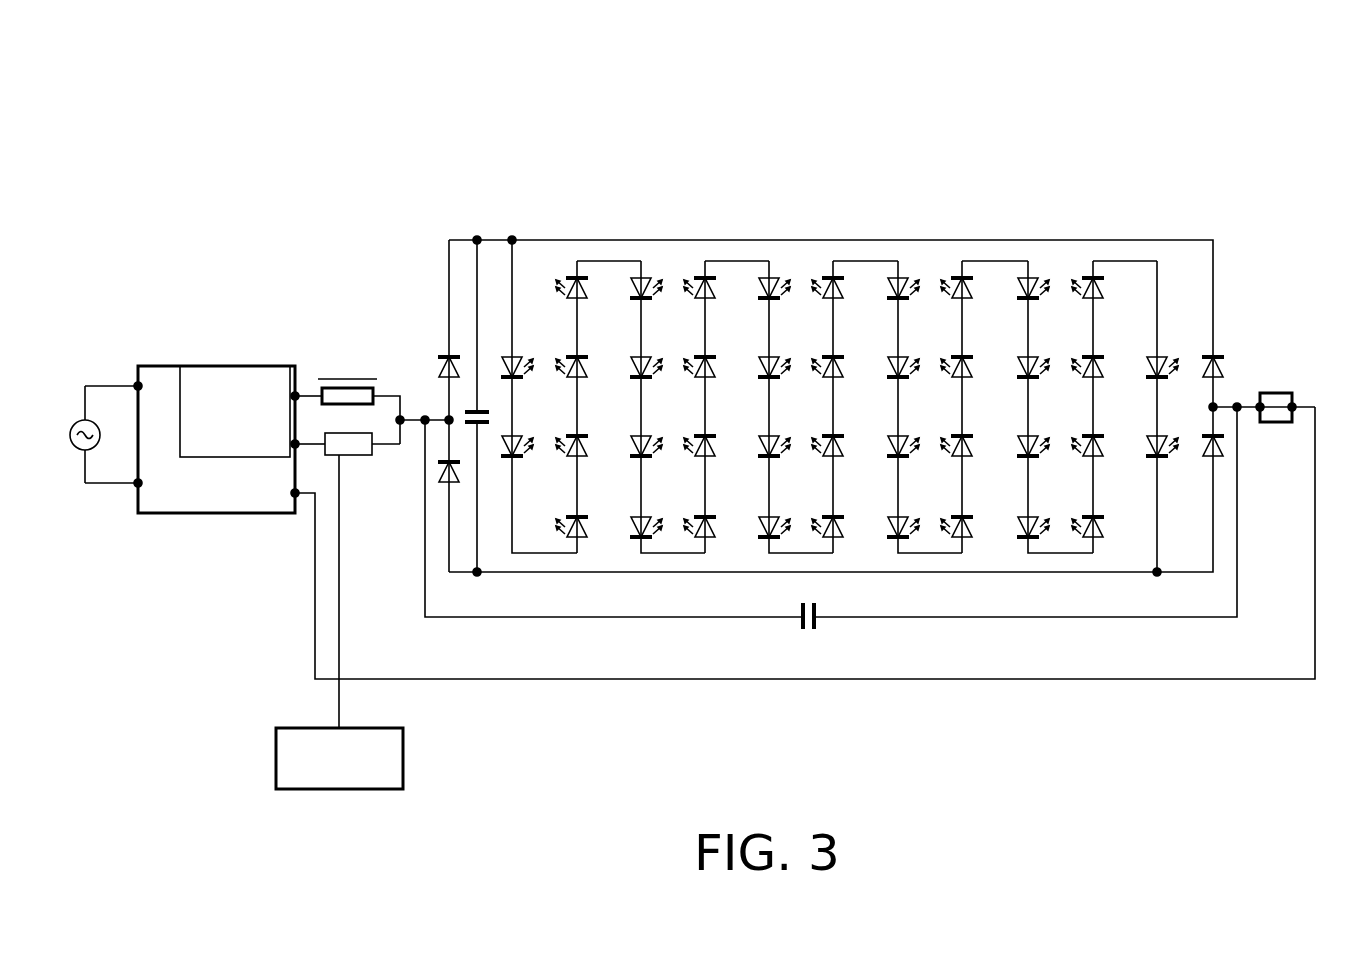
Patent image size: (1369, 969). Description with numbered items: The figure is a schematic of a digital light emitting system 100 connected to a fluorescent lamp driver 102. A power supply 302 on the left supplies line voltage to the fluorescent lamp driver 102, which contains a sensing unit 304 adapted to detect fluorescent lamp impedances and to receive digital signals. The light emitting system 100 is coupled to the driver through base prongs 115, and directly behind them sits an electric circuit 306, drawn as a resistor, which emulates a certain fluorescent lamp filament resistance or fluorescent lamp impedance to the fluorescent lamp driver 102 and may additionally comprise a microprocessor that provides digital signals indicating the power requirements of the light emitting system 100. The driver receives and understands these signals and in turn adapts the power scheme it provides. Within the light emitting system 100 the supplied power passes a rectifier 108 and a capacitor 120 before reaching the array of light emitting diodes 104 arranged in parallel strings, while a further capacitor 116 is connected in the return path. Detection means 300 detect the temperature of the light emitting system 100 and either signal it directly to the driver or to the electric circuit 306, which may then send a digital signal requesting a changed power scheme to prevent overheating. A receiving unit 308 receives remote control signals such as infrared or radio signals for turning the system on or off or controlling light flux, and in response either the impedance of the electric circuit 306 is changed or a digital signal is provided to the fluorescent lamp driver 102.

The light emitting system 100 is at (882, 341).
The fluorescent lamp driver 102 is at (216, 443).
The light emitting diode 104 is at (645, 277).
The rectifier 108 is at (445, 355).
The base prongs 115 is at (313, 396).
The capacitor 116 is at (818, 607).
The capacitor 120 is at (465, 412).
The detection means 300 is at (360, 457).
The power supply 302 is at (103, 386).
The sensing unit 304 is at (205, 378).
The electric circuit 306 is at (358, 373).
The receiving unit 308 is at (276, 758).